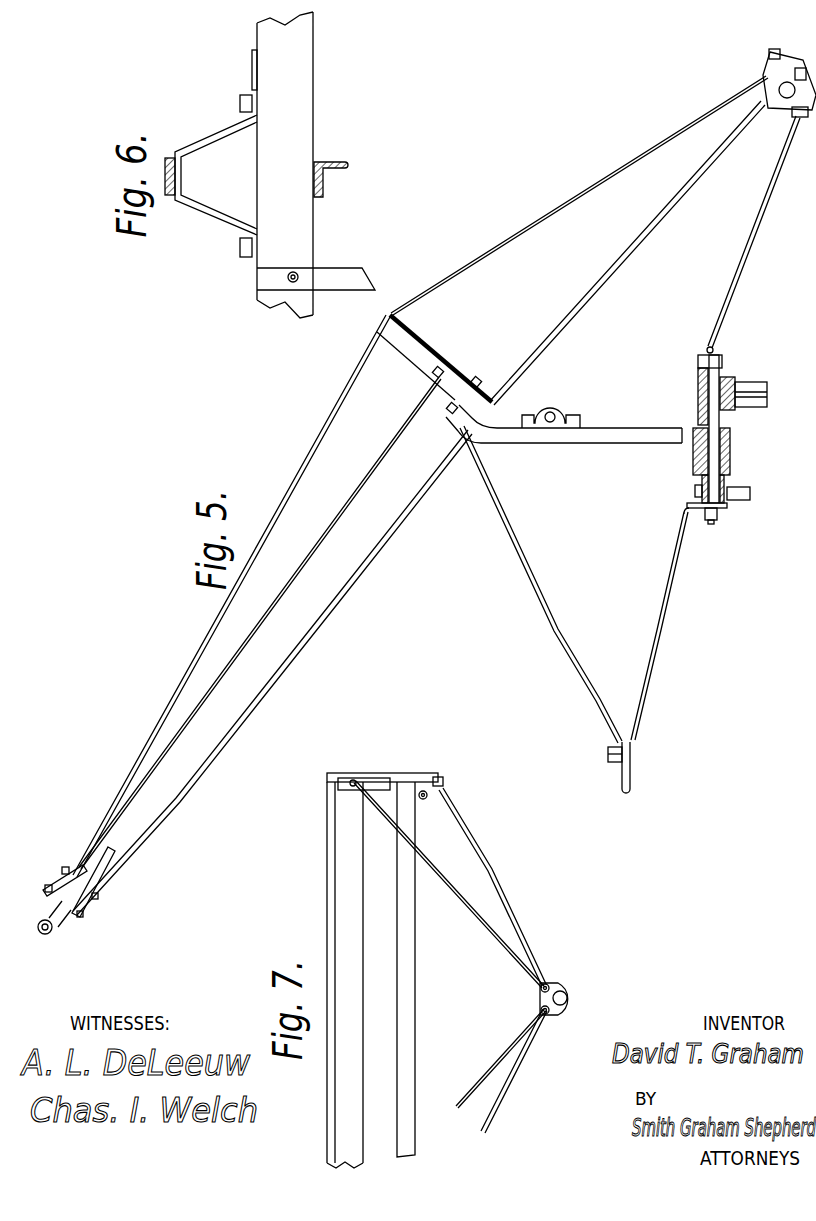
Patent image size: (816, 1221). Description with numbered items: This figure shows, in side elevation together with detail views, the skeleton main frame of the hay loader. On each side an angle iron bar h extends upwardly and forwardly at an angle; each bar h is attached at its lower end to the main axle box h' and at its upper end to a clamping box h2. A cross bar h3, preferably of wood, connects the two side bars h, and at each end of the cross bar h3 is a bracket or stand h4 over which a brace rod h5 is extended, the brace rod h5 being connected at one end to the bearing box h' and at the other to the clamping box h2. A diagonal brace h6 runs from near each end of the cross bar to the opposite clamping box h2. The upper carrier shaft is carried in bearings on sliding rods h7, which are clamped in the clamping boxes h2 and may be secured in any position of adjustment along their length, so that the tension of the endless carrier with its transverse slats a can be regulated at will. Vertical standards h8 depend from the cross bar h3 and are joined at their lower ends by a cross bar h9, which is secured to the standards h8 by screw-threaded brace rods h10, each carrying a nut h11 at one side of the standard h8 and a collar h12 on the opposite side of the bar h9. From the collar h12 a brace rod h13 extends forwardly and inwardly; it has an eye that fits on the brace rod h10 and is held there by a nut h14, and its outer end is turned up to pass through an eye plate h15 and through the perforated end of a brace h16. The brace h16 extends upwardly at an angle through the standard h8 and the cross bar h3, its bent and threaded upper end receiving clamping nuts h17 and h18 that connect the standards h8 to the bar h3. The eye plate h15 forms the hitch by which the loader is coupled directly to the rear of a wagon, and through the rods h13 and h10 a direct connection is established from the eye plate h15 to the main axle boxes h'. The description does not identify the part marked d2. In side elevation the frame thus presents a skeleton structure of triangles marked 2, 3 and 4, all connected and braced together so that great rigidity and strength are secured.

In FIG. 5, the main axle box h' is at (789, 71).
In FIG. 6, the angle iron bar h is at (334, 166).
In FIG. 5, the angle iron bar h is at (419, 508).
In FIG. 5, the clamping box h2 is at (60, 920).
In FIG. 6, the cross bar h3 is at (285, 165).
In FIG. 5, the cross bar h3 is at (460, 385).
In FIG. 7, the cross bar h3 is at (352, 847).
In FIG. 6, the bracket or stand h4 is at (215, 137).
In FIG. 5, the bracket or stand h4 is at (405, 355).
In FIG. 6, the brace rod h5 is at (167, 160).
In FIG. 5, the brace rod h5 is at (455, 272).
In FIG. 6, the diagonal brace h6 is at (251, 63).
In FIG. 5, the diagonal brace h6 is at (350, 503).
In FIG. 5, the sliding rod h7 is at (102, 864).
In FIG. 6, the vertical standard h8 is at (343, 277).
In FIG. 5, the vertical standard h8 is at (638, 437).
In FIG. 7, the vertical standard h8 is at (374, 785).
In FIG. 5, the cross bar h9 is at (693, 463).
In FIG. 7, the cross bar h9 is at (405, 930).
In FIG. 5, the brace rod h10 is at (719, 318).
In FIG. 5, the nut h11 is at (700, 420).
In FIG. 5, the collar h12 is at (730, 483).
In FIG. 7, the collar h12 is at (424, 789).
In FIG. 5, the brace rod h13 is at (660, 622).
In FIG. 7, the brace rod h13 is at (484, 860).
In FIG. 5, the nut h14 is at (718, 513).
In FIG. 5, the eye plate h15 is at (630, 770).
In FIG. 7, the eye plate h15 is at (576, 996).
In FIG. 5, the brace h16 is at (545, 596).
In FIG. 7, the brace h16 is at (463, 900).
In FIG. 6, the clamping nut h17 is at (292, 271).
In FIG. 5, the clamping nut h17 is at (447, 411).
In FIG. 5, the clamping nut h18 is at (481, 381).
In FIG. 5, the rail flange d2 is at (700, 383).
In FIG. 5, the transverse slat a is at (48, 936).
In FIG. 5, the triangle 2 is at (512, 287).
In FIG. 5, the triangle 3 is at (626, 333).
In FIG. 5, the triangle 4 is at (589, 540).